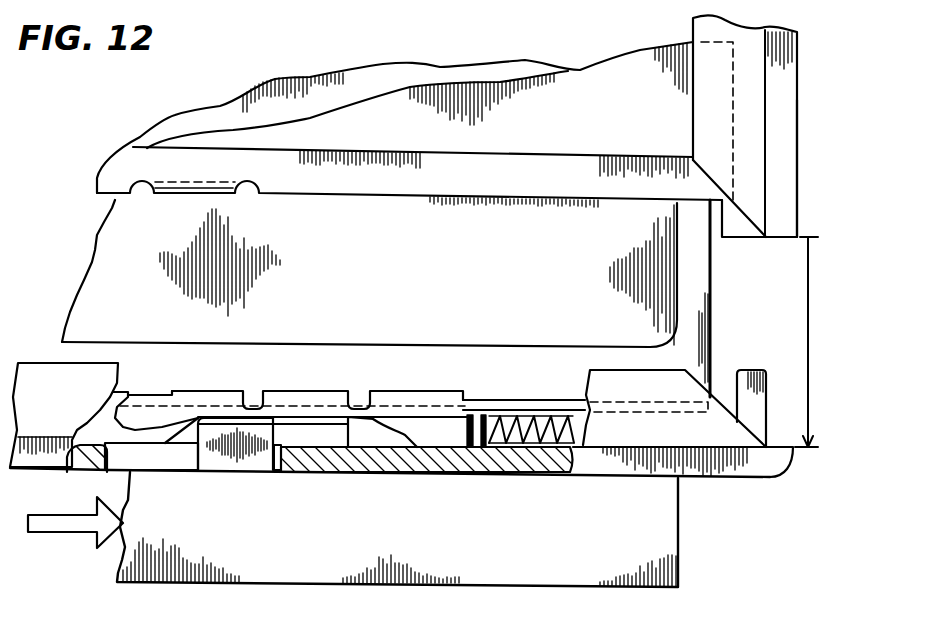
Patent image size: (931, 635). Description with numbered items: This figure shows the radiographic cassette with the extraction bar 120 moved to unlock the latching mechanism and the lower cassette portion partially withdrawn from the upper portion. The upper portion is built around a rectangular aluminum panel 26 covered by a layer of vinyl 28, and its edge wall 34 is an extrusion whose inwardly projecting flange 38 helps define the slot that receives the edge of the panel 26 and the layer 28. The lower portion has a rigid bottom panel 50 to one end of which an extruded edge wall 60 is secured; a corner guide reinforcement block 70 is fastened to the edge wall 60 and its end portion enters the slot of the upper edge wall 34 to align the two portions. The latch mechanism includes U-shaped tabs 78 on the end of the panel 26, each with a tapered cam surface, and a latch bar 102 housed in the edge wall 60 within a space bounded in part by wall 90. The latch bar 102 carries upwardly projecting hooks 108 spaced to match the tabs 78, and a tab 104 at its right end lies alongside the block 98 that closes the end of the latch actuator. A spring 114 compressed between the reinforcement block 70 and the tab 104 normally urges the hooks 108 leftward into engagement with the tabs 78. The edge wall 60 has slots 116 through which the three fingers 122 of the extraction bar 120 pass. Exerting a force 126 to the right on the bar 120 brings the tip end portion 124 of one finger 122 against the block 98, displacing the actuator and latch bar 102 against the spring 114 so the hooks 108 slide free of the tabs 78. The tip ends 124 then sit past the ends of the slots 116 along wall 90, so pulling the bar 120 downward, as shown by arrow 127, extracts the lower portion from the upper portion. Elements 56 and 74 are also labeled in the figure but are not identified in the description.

The rectangular panel 26 is at (598, 185).
The layer of vinyl 28 is at (611, 63).
The edge wall 34 is at (797, 182).
The inwardly projecting flange 38 is at (716, 105).
The bottom panel 50 is at (711, 297).
The housing body 56 is at (343, 85).
The edge wall 60 is at (34, 362).
The corner guide reinforcement block 70 is at (768, 428).
The stop tab 74 is at (757, 371).
The tab 78 is at (213, 185).
The wall 90 is at (190, 408).
The block 98 is at (383, 428).
The latch bar 102 is at (444, 432).
The tab 104 is at (483, 447).
The hook 108 is at (313, 392).
The spring 114 is at (533, 406).
The slot 116 is at (107, 475).
The extraction bar 120 is at (680, 558).
The finger 122 is at (213, 463).
The tip end portion 124 is at (330, 425).
The force 126 is at (67, 532).
The arrow 127 is at (807, 296).